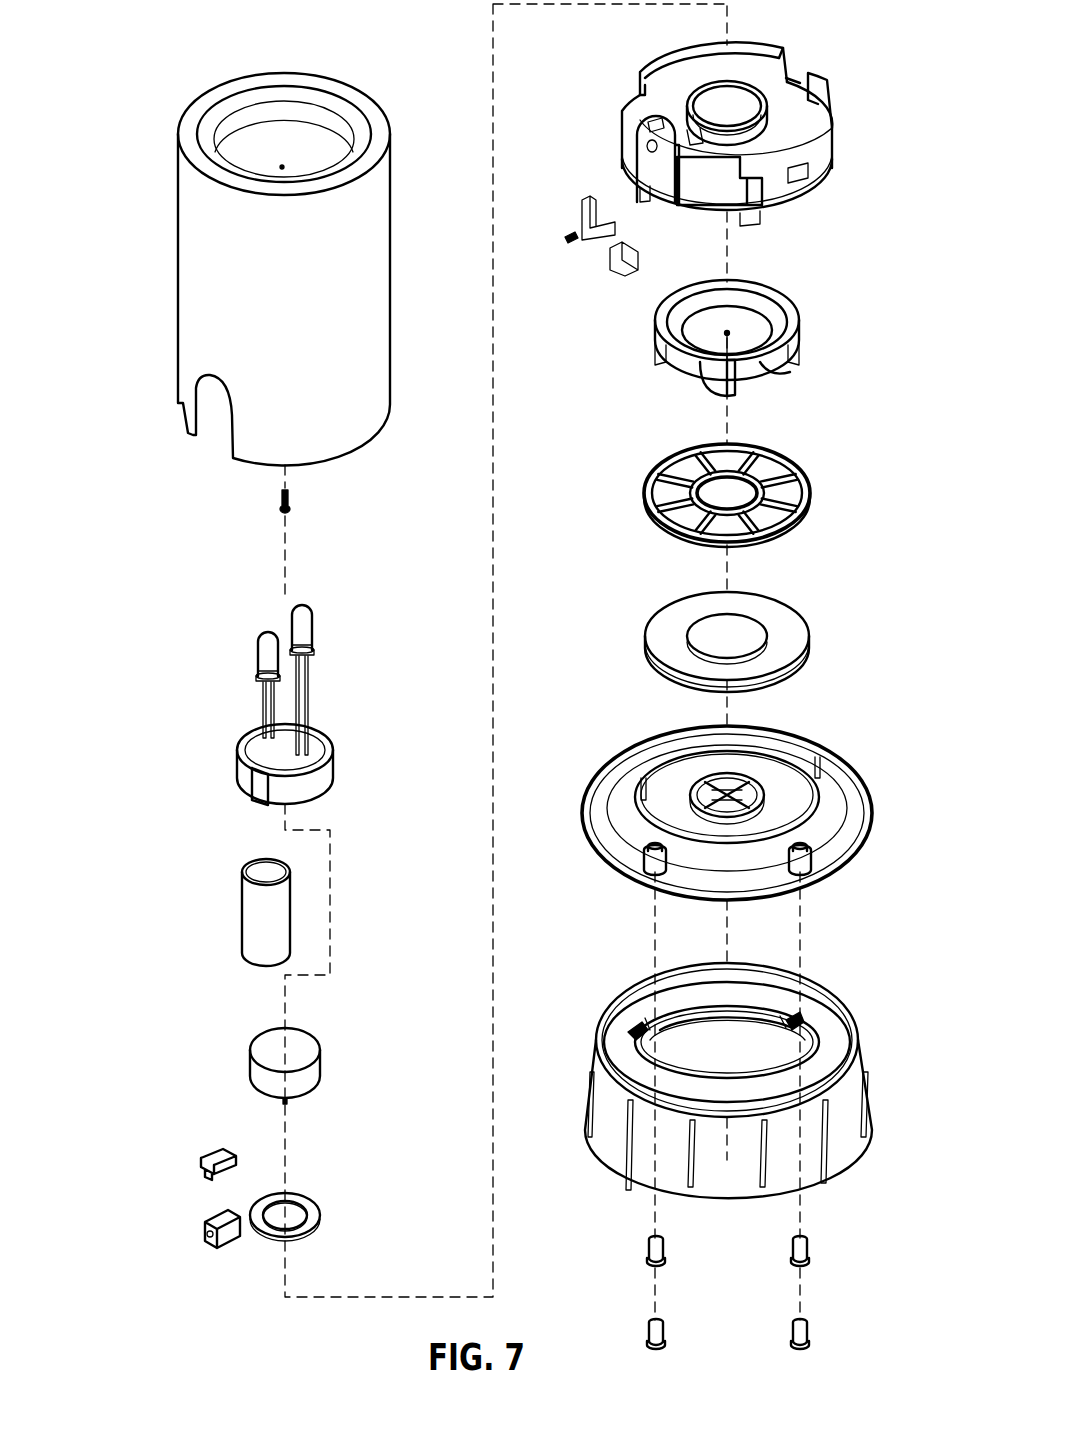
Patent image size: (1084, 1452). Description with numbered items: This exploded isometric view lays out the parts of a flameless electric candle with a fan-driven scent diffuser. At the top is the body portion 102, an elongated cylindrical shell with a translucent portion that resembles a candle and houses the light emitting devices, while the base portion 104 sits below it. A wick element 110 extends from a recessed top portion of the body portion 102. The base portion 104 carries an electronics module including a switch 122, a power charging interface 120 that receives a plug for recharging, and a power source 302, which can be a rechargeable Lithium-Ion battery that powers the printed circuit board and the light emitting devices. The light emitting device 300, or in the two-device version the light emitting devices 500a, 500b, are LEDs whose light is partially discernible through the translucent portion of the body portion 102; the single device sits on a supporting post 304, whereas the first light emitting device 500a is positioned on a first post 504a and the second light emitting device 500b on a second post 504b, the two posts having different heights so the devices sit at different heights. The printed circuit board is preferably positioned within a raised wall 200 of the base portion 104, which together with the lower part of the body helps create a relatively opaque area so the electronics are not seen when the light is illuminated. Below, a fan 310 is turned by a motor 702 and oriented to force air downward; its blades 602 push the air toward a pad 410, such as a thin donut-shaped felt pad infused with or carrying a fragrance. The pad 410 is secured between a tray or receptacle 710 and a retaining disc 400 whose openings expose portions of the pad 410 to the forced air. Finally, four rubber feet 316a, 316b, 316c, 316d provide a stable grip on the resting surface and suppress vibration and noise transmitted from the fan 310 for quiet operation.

The body portion 102 is at (178, 242).
The base portion 104 is at (600, 1028).
The wick element 110 is at (281, 500).
The power charging interface 120 is at (205, 1234).
The switch 122 is at (200, 1156).
The raised wall 200 is at (815, 84).
The light emitting device 300 is at (380, 630).
The first light emitting device 500a is at (312, 627).
The second light emitting device 500b is at (258, 660).
The supporting post 304 is at (382, 705).
The first post 504a is at (312, 699).
The second post 504b is at (262, 699).
The power source 302 is at (242, 912).
The fan 310 is at (668, 316).
The blades 602 is at (700, 380).
The retaining disc 400 is at (645, 492).
The pad 410 is at (648, 626).
The motor 702 is at (250, 1058).
The tray or receptacle 710 is at (612, 773).
The rubber foot 316a is at (648, 1252).
The rubber foot 316b is at (806, 1252).
The rubber foot 316c is at (806, 1336).
The rubber foot 316d is at (648, 1336).